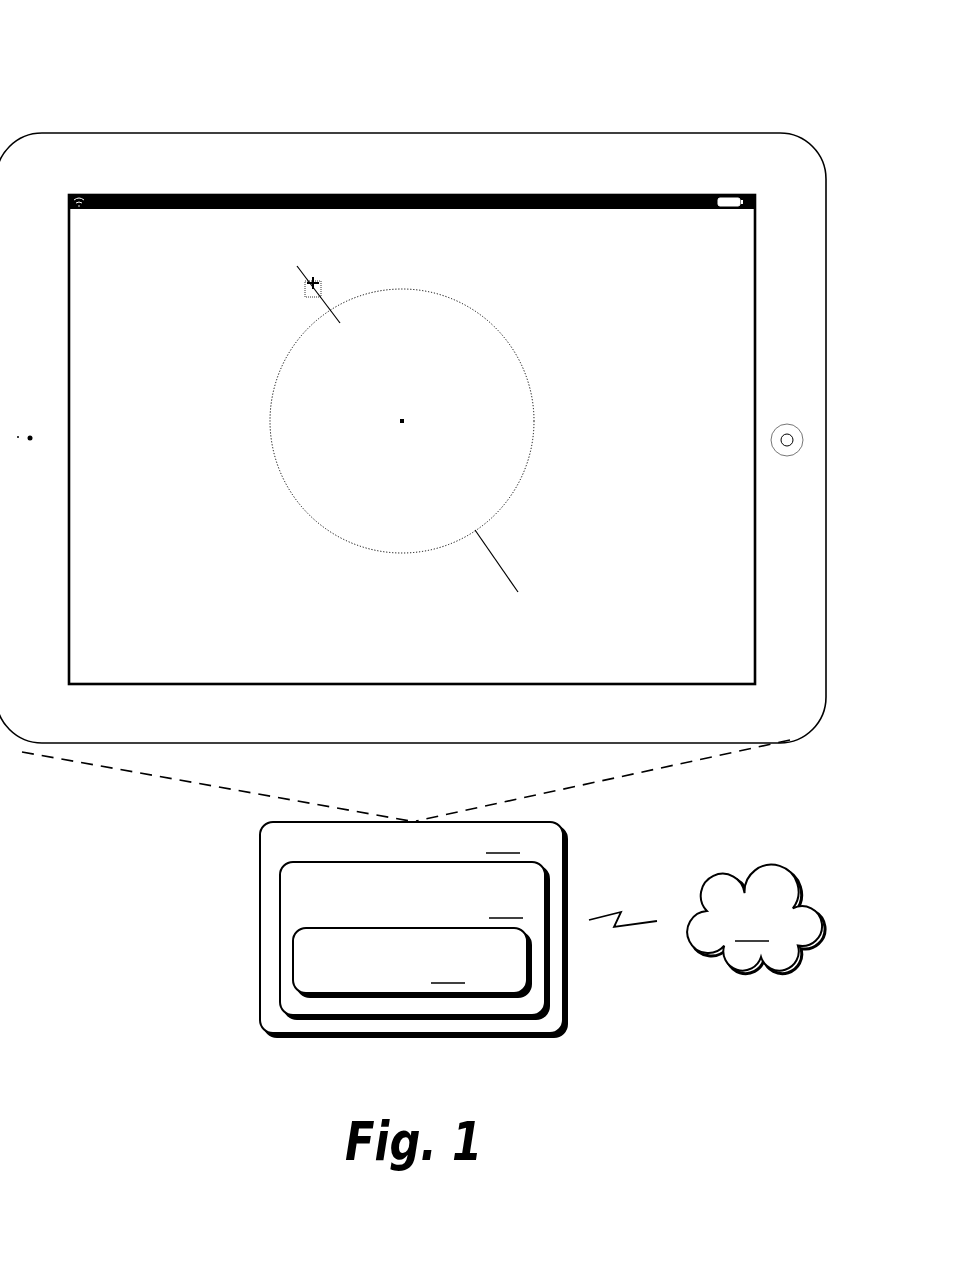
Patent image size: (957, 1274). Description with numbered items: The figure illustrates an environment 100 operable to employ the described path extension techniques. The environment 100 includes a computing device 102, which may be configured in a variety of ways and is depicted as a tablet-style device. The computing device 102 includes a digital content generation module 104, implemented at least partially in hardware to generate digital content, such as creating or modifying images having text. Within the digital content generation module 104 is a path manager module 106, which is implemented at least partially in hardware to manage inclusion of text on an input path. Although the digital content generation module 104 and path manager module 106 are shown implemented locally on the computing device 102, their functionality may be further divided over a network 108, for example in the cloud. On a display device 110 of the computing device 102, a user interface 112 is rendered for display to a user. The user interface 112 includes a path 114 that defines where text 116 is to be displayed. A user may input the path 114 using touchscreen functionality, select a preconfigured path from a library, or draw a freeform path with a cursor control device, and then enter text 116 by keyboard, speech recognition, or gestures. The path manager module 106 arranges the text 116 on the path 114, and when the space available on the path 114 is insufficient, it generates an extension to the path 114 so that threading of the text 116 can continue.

The environment 100 is at (149, 83).
The computing device 102 is at (413, 929).
The digital content generation module 104 is at (414, 940).
The path manager module 106 is at (412, 962).
The network 108 is at (756, 919).
The display device 110 is at (436, 195).
The user interface 112 is at (733, 244).
The path 114 is at (298, 337).
The text 116 is at (239, 364).